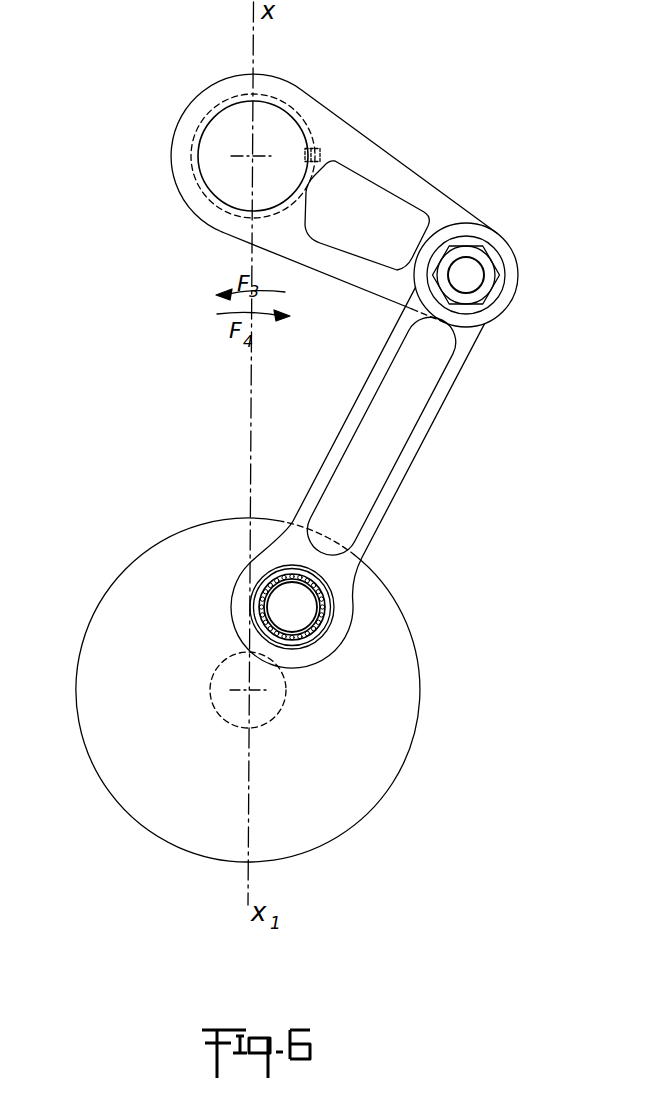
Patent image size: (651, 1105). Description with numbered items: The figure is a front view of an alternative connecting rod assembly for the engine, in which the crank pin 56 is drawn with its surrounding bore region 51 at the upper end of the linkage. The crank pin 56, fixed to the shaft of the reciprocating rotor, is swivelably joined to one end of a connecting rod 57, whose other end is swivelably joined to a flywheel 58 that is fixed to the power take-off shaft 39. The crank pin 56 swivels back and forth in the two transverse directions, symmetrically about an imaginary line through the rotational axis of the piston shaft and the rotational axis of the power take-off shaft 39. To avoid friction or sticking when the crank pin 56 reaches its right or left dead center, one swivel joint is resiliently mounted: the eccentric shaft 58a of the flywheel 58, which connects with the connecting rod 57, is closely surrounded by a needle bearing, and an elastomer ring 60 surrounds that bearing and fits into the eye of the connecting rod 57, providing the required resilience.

The power take-off shaft 39 is at (217, 705).
The bore of lever arm 51 is at (270, 122).
The crank pin 56 is at (327, 133).
The connecting rod 57 is at (429, 436).
The flywheel 58 is at (106, 621).
The eccentric shaft 58a is at (273, 610).
The elastomer ring 60 is at (334, 607).